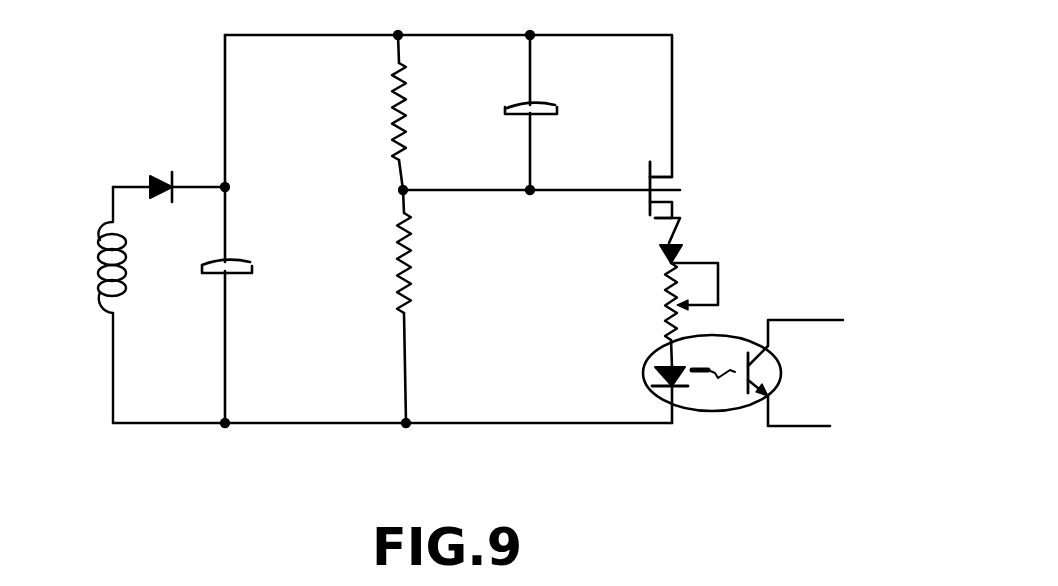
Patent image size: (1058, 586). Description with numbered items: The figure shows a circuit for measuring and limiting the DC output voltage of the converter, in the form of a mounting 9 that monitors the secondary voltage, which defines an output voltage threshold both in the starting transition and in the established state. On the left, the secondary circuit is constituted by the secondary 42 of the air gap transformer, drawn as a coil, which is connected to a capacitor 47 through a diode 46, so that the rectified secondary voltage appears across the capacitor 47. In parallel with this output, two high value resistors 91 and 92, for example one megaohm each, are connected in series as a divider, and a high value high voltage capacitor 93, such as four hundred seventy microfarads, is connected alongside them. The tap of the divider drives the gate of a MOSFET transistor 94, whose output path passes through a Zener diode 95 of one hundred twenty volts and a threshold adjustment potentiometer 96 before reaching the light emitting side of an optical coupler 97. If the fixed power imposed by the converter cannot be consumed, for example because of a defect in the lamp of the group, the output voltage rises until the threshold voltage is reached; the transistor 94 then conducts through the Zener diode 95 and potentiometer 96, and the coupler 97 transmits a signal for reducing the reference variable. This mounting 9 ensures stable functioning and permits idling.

The mounting 9 is at (713, 105).
The secondary 42 is at (100, 252).
The diode 46 is at (152, 182).
The capacitor 47 is at (233, 272).
The high value resistor 91 is at (395, 110).
The high value resistor 92 is at (398, 260).
The high value high voltage capacitor 93 is at (538, 106).
The MOSFET transistor 94 is at (683, 182).
The Zener diode 95 is at (677, 250).
The threshold adjustment potentiometer 96 is at (668, 316).
The optical coupler 97 is at (645, 373).